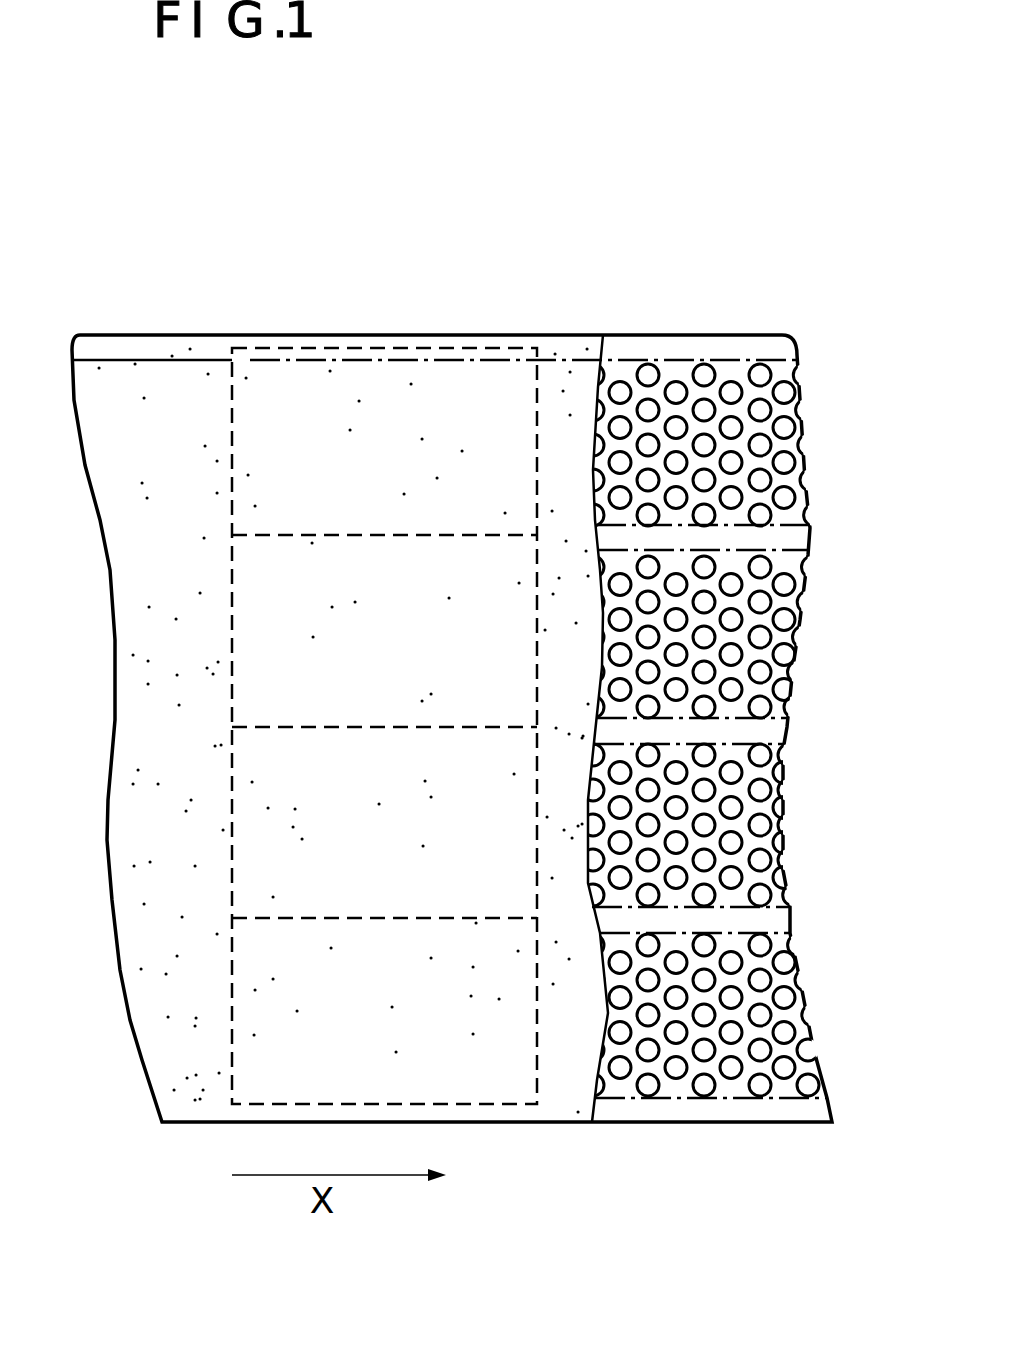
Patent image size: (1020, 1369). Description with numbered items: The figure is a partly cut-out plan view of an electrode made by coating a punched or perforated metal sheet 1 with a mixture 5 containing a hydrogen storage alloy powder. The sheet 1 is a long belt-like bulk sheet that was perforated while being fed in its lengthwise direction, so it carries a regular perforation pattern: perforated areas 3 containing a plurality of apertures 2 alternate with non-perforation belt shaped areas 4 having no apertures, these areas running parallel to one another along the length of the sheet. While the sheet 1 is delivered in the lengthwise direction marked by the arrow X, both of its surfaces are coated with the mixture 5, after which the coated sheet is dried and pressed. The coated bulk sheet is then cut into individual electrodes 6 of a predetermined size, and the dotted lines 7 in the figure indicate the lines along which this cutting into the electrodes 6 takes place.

The punched or perforated metal sheet 1 is at (806, 843).
The perforation holes 2 is at (785, 391).
The perforated areas 3 is at (783, 483).
The non-perforation belt shaped areas 4 is at (763, 735).
The mixture containing the hydrogen storage alloy powder 5 is at (553, 387).
The individual electrodes 6 is at (220, 475).
The dotted lines 7 is at (452, 918).